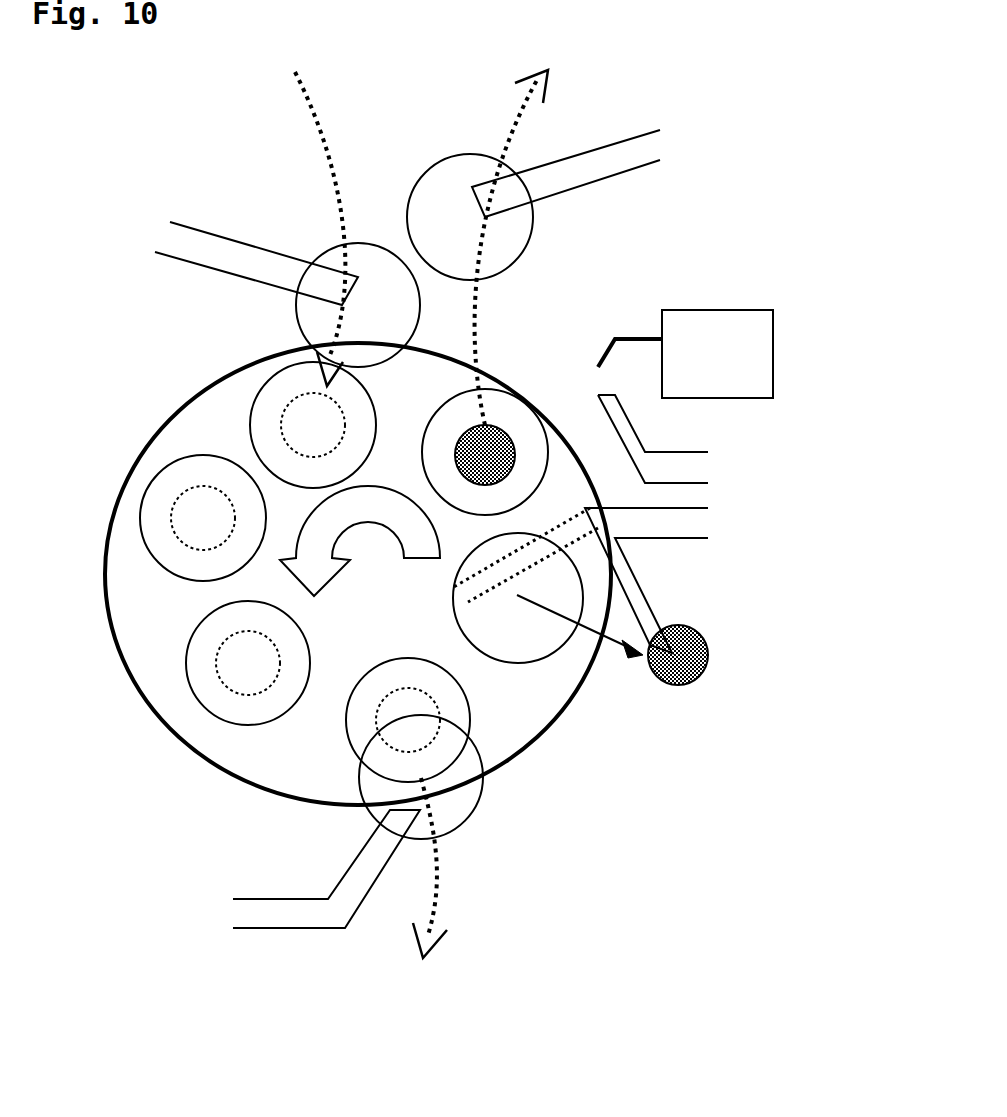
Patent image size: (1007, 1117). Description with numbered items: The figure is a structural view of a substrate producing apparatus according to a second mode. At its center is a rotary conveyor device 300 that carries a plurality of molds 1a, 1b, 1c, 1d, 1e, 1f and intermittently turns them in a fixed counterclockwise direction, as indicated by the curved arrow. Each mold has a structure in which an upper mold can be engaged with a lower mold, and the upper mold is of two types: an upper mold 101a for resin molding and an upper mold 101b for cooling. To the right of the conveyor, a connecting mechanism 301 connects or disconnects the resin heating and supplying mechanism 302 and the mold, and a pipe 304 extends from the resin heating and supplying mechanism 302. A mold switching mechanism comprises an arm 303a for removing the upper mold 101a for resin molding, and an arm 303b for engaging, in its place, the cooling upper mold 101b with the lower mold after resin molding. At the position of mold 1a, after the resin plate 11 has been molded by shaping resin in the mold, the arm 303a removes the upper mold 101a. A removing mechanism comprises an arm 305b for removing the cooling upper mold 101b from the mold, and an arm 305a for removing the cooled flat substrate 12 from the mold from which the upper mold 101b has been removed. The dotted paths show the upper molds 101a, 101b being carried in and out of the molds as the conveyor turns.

The rotary conveyor device 300 is at (148, 437).
The mold 1a is at (513, 394).
The mold 1b is at (273, 377).
The mold 1c is at (141, 503).
The mold 1d is at (186, 663).
The mold 1e is at (470, 715).
The mold 1f is at (545, 652).
The resin plate 11 is at (281, 427).
The cooled flat substrate 12 is at (697, 680).
The upper mold for resin molding 101a is at (425, 173).
The upper mold for cooling 101b is at (316, 259).
The connecting mechanism 301 is at (683, 453).
The resin heating and supplying mechanism 302 is at (710, 310).
The arm 303a is at (583, 188).
The arm 303b is at (242, 277).
The pipe 304 is at (615, 339).
The arm 305a is at (642, 581).
The arm 305b is at (350, 868).